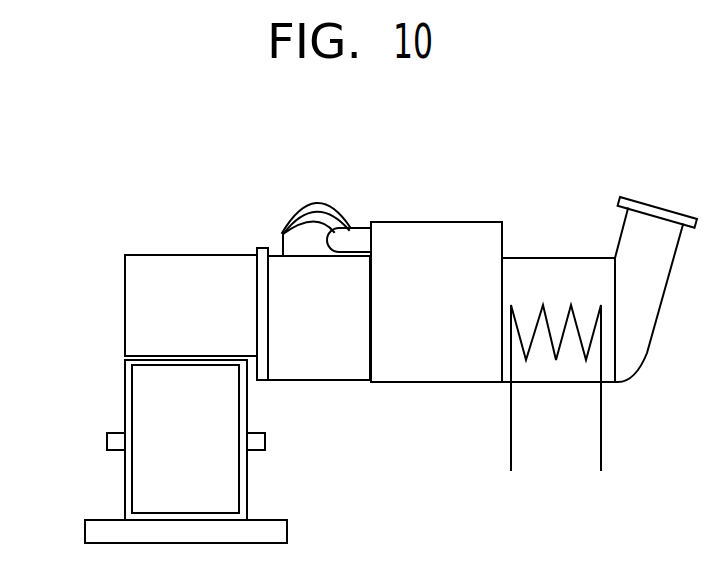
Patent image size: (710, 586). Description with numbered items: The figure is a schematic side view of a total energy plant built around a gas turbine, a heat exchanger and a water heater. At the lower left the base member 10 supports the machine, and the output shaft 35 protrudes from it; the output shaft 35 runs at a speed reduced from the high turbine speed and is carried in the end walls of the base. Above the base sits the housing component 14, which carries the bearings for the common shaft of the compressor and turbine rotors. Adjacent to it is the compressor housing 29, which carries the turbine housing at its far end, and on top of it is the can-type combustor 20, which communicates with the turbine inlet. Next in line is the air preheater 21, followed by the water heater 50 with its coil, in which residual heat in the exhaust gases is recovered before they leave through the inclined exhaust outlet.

The base member 10 is at (205, 430).
The housing component 14 is at (206, 313).
The combustor 20 is at (302, 245).
The air preheater 21 is at (461, 318).
The compressor housing 29 is at (338, 317).
The output shaft 35 is at (107, 444).
The water heater 50 is at (555, 278).